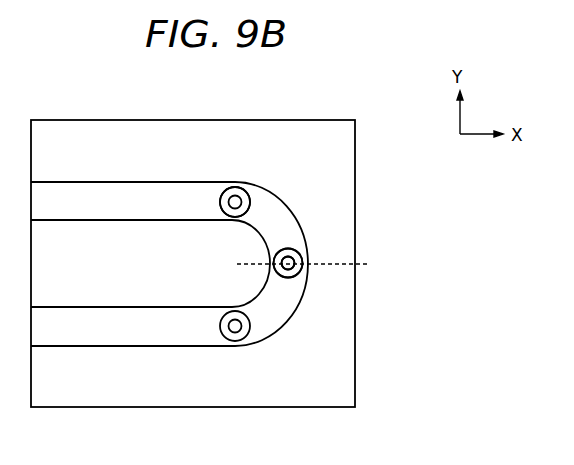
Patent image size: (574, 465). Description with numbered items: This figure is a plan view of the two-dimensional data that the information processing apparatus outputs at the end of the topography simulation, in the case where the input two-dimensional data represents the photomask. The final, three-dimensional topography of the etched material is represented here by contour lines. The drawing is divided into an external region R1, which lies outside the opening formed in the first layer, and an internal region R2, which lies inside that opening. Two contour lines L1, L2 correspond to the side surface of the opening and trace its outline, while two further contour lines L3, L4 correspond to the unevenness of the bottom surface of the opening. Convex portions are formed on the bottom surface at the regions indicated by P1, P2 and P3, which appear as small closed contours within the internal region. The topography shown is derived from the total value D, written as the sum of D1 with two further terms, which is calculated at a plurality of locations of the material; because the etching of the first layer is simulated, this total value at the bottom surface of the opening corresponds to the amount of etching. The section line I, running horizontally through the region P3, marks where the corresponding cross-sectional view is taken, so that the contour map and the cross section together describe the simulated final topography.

The external region R1 is at (78, 388).
The internal region R2 is at (152, 330).
The contour line L1 is at (264, 287).
The contour line L2 is at (289, 324).
The contour line L3 is at (294, 274).
The contour line L4 is at (291, 259).
The convex portion region P1 is at (237, 177).
The convex portion region P2 is at (235, 355).
The convex portion region P3 is at (260, 253).
The total value component D1 is at (258, 199).
The section line I-I' I is at (308, 264).